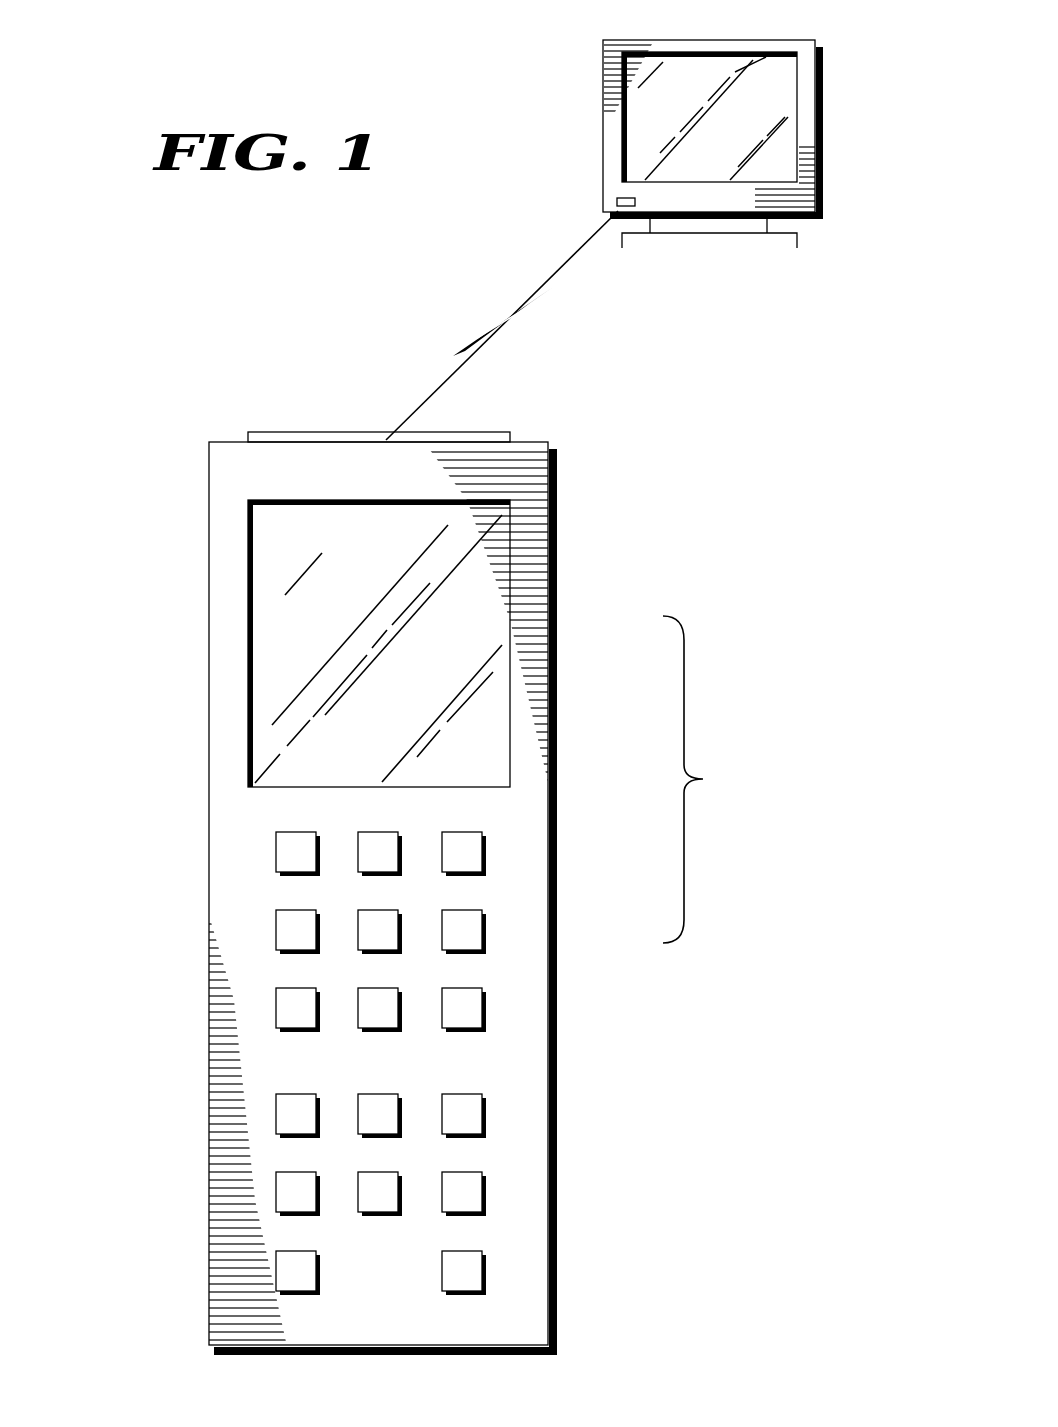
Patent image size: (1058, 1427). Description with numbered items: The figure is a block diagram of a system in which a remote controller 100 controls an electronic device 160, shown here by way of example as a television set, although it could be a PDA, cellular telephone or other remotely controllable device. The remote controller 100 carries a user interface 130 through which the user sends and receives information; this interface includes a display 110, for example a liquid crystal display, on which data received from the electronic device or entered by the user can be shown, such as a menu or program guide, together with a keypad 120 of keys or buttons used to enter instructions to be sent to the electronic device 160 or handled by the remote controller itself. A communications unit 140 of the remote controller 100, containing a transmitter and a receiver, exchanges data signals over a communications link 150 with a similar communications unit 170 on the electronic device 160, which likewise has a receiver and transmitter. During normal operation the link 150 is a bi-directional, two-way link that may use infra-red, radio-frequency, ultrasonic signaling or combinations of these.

The remote controller 100 is at (112, 522).
The display 110 is at (470, 635).
The keypad 120 is at (468, 852).
The user interface 130 is at (701, 779).
The communications unit 140 is at (299, 434).
The communications link 150 is at (502, 312).
The electronic device 160 is at (753, 122).
The communications unit 170 is at (618, 198).